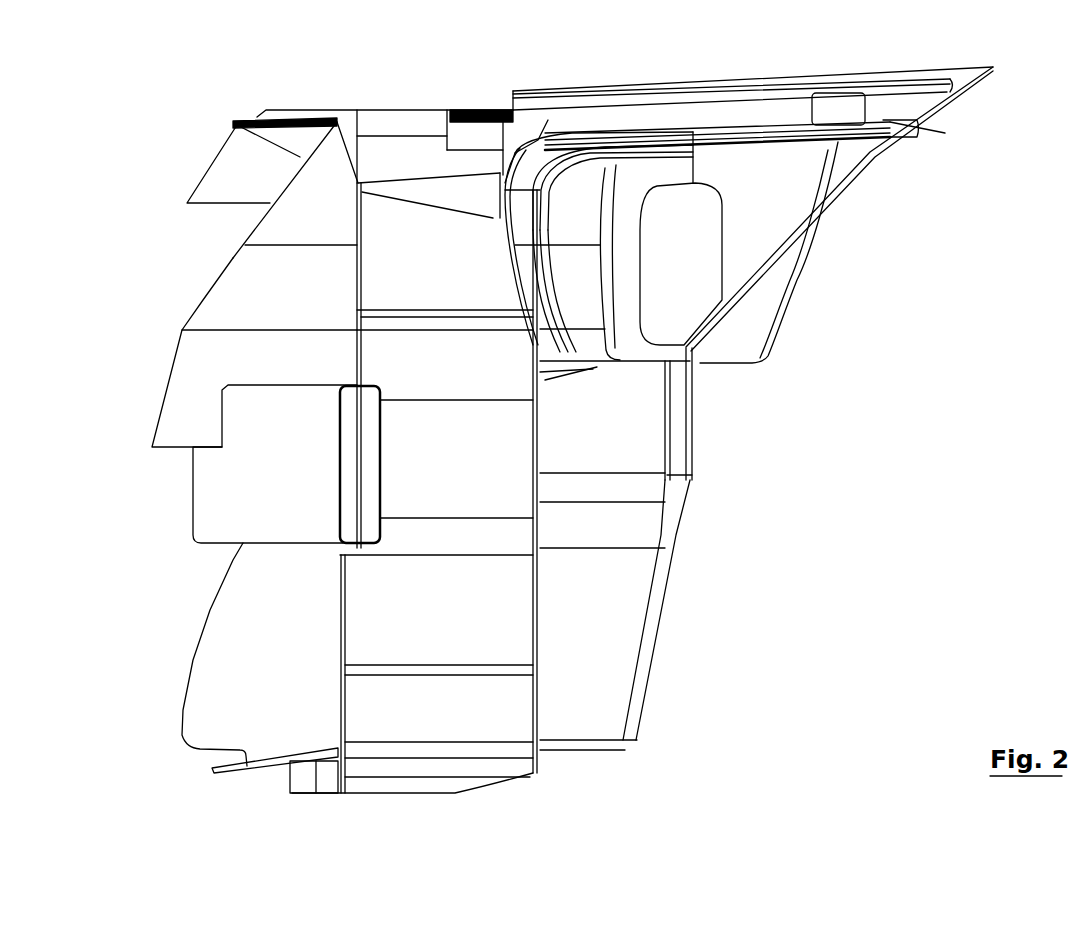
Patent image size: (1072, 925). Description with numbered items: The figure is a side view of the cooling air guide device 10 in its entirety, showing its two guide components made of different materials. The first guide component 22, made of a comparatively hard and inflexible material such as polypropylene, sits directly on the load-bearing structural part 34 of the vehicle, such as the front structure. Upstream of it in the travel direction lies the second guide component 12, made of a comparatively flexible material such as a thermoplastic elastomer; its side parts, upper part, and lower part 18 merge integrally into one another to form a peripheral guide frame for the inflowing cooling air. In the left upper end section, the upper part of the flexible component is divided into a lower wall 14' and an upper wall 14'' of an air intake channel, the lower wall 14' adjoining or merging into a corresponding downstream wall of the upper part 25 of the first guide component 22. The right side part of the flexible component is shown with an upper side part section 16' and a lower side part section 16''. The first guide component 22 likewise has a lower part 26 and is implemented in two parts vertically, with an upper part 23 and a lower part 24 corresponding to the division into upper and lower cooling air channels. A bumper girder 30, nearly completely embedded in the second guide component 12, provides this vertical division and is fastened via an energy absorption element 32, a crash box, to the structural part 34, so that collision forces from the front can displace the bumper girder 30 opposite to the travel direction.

The cooling air guide device 10 is at (156, 580).
The second guide component 12 is at (329, 100).
The lower wall 14' is at (235, 190).
The upper wall 14'' is at (232, 128).
The upper side part section 16' is at (219, 352).
The lower side part section 16'' is at (190, 673).
The lower part 18 is at (232, 772).
The first guide component 22 is at (434, 88).
The upper part of the first guide component 23 is at (448, 281).
The lower part of the first guide component 24 is at (448, 626).
The upper part 25 is at (414, 190).
The lower part 26 is at (388, 787).
The bumper girder 30 is at (215, 505).
The energy absorption element 32 is at (507, 462).
The load-bearing structural part 34 is at (820, 180).